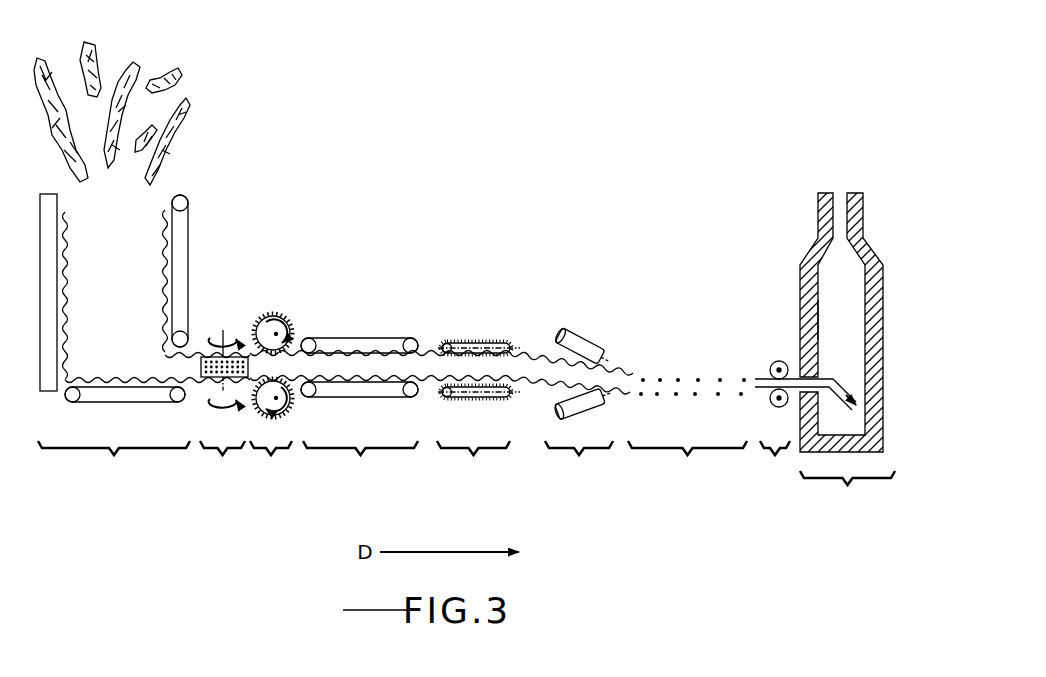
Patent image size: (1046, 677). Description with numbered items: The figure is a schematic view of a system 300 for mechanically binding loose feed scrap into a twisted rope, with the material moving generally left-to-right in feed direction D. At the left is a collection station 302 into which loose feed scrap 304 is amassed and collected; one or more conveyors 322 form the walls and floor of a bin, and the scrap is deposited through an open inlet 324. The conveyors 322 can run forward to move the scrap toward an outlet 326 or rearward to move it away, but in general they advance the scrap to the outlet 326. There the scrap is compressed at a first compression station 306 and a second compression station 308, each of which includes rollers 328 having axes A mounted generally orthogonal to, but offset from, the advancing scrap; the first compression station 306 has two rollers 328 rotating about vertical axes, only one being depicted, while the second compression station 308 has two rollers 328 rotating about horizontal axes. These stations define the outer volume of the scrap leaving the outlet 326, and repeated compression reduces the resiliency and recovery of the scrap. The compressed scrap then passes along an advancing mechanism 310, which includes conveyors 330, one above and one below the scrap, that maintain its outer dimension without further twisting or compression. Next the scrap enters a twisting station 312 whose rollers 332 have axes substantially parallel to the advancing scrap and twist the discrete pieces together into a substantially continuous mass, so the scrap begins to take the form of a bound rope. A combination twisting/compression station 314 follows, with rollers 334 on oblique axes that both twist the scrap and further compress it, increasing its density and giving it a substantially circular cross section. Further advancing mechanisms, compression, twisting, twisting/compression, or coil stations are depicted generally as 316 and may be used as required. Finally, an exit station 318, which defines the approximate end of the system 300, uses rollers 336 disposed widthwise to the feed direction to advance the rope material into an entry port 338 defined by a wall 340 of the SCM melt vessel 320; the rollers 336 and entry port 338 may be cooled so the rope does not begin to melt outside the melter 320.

The system 300 is at (615, 140).
The collection station 302 is at (114, 461).
The loose feed scrap 304 is at (152, 70).
The first compression station 306 is at (222, 460).
The second compression station 308 is at (271, 461).
The advancing mechanism 310 is at (360, 461).
The twisting station 312 is at (473, 460).
The twisting/compression station 314 is at (579, 462).
The further stations 316 is at (774, 362).
The exit station 318 is at (775, 459).
The SCM melt vessel 320 is at (847, 354).
The conveyors 322 is at (182, 245).
The open inlet 324 is at (132, 228).
The outlet 326 is at (168, 368).
The rollers 328 is at (203, 356).
The conveyors 330 is at (362, 345).
The rollers 332 is at (466, 342).
The rollers 334 is at (582, 350).
The rollers 336 is at (771, 402).
The entry port 338 is at (823, 376).
The wall 340 is at (819, 308).